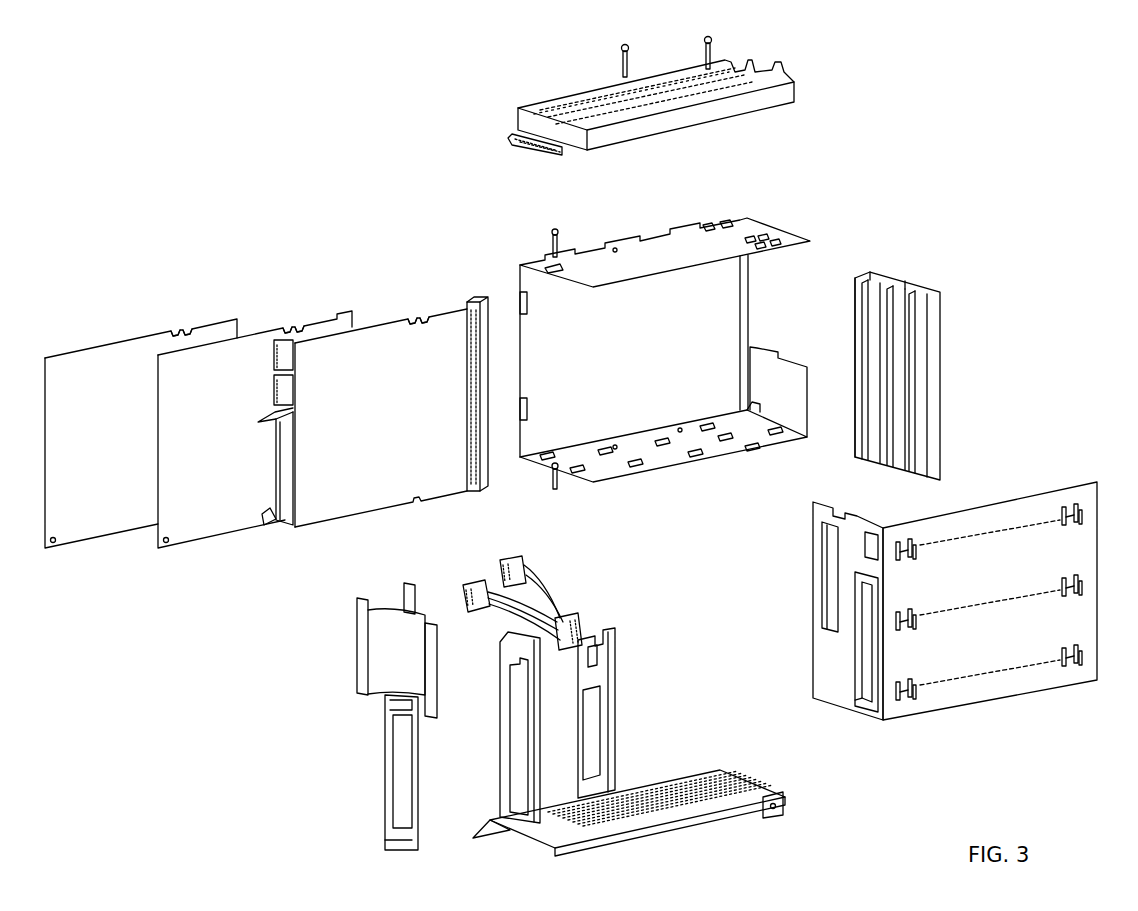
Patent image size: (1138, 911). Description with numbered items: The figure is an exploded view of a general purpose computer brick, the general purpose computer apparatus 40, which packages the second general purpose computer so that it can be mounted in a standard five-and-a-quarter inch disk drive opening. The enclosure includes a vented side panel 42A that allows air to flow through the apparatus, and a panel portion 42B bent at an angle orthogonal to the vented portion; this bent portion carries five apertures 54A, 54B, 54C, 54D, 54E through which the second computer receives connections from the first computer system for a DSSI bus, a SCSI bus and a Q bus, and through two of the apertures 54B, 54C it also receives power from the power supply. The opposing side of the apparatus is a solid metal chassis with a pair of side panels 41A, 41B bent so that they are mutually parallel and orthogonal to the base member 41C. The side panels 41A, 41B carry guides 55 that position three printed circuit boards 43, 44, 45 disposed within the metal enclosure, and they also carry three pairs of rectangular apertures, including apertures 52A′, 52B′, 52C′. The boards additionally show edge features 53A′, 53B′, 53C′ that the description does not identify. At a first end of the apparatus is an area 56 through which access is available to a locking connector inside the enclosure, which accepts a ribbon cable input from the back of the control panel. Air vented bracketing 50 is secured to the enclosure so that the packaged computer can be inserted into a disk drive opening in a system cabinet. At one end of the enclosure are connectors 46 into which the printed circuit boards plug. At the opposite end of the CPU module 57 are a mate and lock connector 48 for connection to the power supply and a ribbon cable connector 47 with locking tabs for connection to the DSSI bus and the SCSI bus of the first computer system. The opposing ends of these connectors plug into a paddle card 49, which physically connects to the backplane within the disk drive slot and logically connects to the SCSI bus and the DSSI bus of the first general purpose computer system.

The general purpose computer apparatus 40 is at (372, 209).
The side panel 41A is at (656, 466).
The side panel 41B is at (680, 230).
The base member 41C is at (519, 270).
The vented side panel 42A is at (985, 706).
The panel portion 42B is at (815, 686).
The printed circuit board 43 is at (134, 342).
The printed circuit board 44 is at (258, 334).
The printed circuit board 45 is at (397, 313).
The connectors 46 is at (941, 346).
The ribbon cable connector 47 is at (417, 608).
The mate and lock connector 48 is at (537, 611).
The paddle card 49 is at (615, 689).
The air vented bracketing 50 is at (669, 786).
The rectangular aperture 52A′ is at (764, 250).
The rectangular aperture 52B′ is at (750, 236).
The rectangular aperture 52C′ is at (708, 222).
The first notch of board 43 53A′ is at (176, 330).
The first notch of board 44 53B′ is at (288, 327).
The first notch of board 45 53C′ is at (414, 318).
The aperture 54A is at (830, 560).
The aperture 54B is at (870, 527).
The aperture 54C is at (872, 588).
The aperture 54D is at (873, 712).
The aperture 54E is at (846, 702).
The guides 55 is at (536, 462).
The access area 56 is at (810, 323).
The CPU module 57 is at (269, 526).